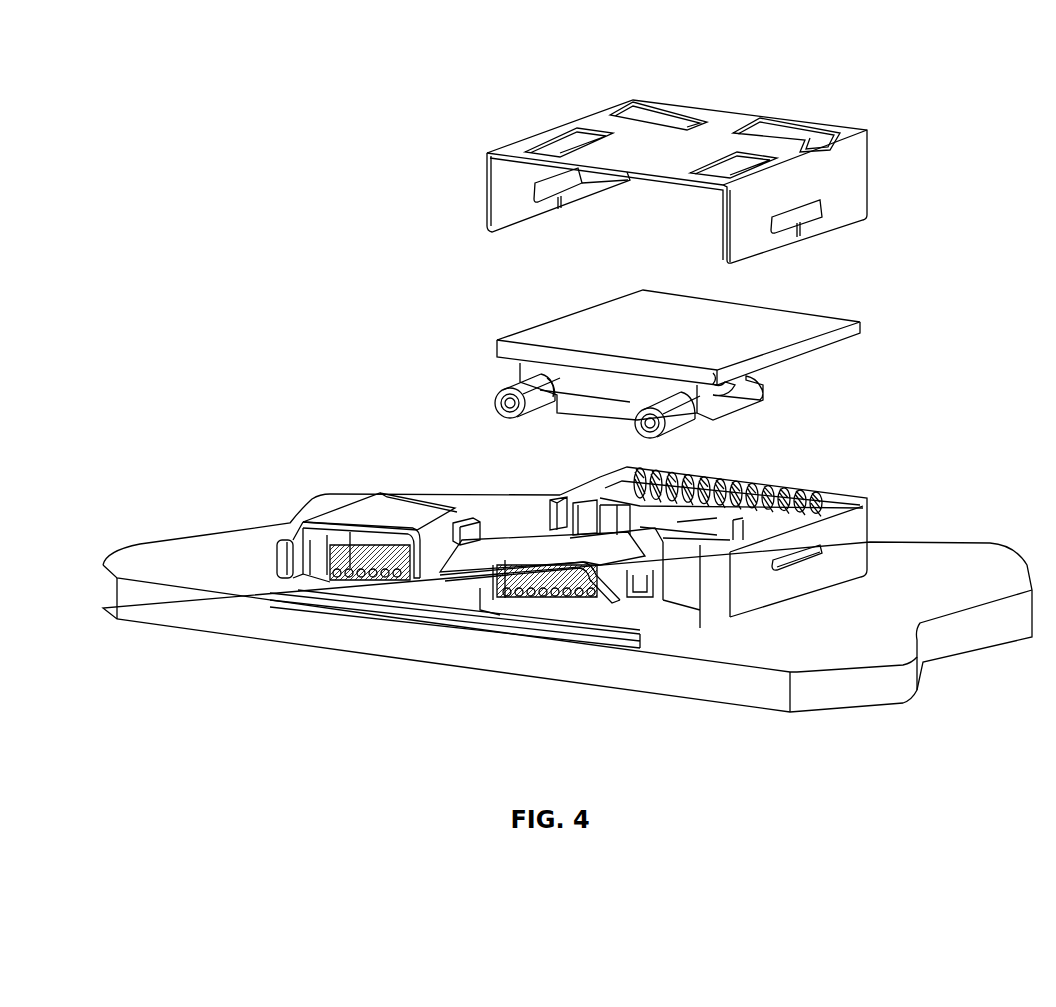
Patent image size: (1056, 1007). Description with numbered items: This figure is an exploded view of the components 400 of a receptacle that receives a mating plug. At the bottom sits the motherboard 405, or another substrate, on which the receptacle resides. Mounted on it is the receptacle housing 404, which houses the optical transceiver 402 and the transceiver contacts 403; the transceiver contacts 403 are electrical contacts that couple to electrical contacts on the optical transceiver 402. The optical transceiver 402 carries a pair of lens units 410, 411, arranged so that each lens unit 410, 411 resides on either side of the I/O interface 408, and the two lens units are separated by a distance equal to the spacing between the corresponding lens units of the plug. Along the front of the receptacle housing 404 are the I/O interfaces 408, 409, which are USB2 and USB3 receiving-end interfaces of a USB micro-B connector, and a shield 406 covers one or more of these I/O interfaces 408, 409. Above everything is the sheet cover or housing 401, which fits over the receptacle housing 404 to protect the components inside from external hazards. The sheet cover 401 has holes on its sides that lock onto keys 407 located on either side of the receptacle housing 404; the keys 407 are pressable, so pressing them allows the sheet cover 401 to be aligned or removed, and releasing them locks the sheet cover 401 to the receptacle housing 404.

The components of the receptacle 400 is at (216, 146).
The sheet cover or housing 401 is at (520, 143).
The optical transceiver 402 is at (497, 337).
The transceiver contacts 403 is at (792, 487).
The receptacle housing 404 is at (868, 496).
The motherboard 405 is at (915, 537).
The shield 406 is at (340, 505).
The keys 407 is at (803, 573).
The I/O interface 408 is at (537, 603).
The I/O interface 409 is at (345, 580).
The lens unit 410 is at (495, 390).
The lens unit 411 is at (638, 432).